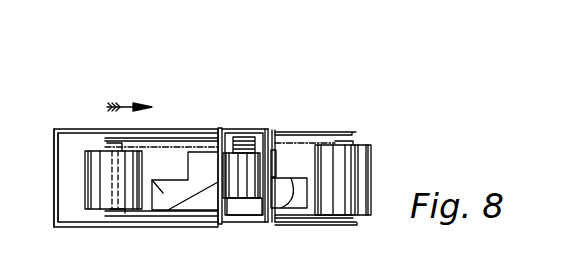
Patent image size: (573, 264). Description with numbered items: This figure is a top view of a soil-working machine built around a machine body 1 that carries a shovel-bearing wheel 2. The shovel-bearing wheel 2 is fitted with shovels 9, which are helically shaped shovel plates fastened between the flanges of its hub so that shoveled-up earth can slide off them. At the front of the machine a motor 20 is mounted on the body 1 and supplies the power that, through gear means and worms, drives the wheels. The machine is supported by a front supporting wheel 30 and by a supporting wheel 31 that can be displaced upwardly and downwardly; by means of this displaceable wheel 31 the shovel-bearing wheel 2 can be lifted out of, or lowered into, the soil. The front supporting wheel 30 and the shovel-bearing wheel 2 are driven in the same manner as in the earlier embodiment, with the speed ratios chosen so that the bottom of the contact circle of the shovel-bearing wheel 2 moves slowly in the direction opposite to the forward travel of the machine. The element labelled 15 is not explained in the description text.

The machine body 1 is at (312, 220).
The end wall 15 is at (57, 197).
The upwardly and downwardly displaceable supporting wheel 31 is at (103, 206).
The shovel-bearing wheel 2 is at (189, 208).
The motor 20 is at (250, 200).
The shovels 9 is at (288, 210).
The front supporting wheel 30 is at (362, 218).